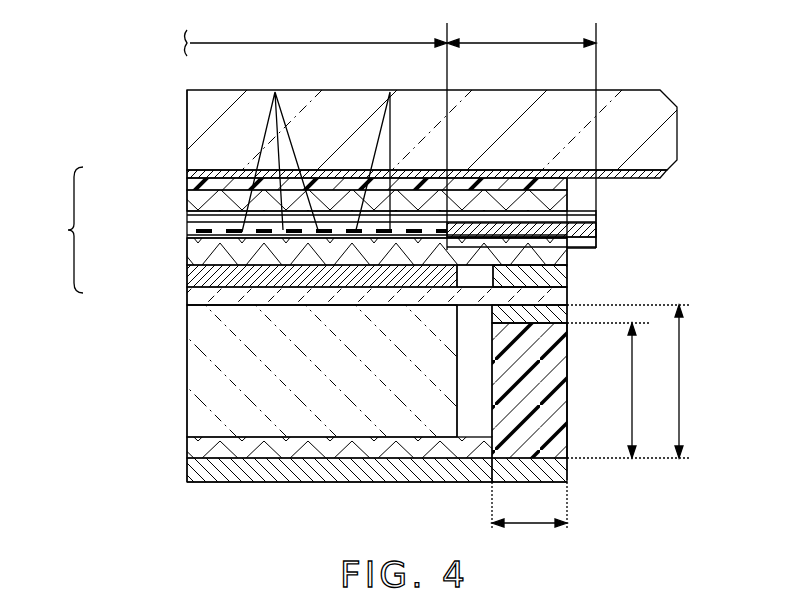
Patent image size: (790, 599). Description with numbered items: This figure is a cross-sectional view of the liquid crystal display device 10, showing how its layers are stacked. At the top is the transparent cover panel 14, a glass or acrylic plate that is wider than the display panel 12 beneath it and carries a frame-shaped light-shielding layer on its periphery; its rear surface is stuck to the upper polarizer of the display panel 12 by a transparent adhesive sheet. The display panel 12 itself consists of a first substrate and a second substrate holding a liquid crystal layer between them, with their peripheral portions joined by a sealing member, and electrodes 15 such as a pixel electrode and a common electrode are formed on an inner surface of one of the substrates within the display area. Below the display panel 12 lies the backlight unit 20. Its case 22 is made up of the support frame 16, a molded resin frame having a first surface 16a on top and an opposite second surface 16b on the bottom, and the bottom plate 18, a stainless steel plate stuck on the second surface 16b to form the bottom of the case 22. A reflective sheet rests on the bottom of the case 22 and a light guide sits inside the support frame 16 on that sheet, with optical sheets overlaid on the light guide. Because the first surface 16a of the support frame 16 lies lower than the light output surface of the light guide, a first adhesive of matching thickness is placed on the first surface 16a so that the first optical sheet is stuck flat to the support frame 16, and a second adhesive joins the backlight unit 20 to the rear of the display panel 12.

The display device 10 is at (637, 58).
The display panel 12 is at (60, 230).
The cover panel 14 is at (210, 98).
The electrodes 15 is at (326, 145).
The support frame 16 is at (545, 375).
The first surface 16a is at (530, 333).
The second surface 16b is at (545, 470).
The bottom plate 18 is at (420, 470).
The backlight unit 20 is at (150, 382).
The case 22 is at (567, 433).